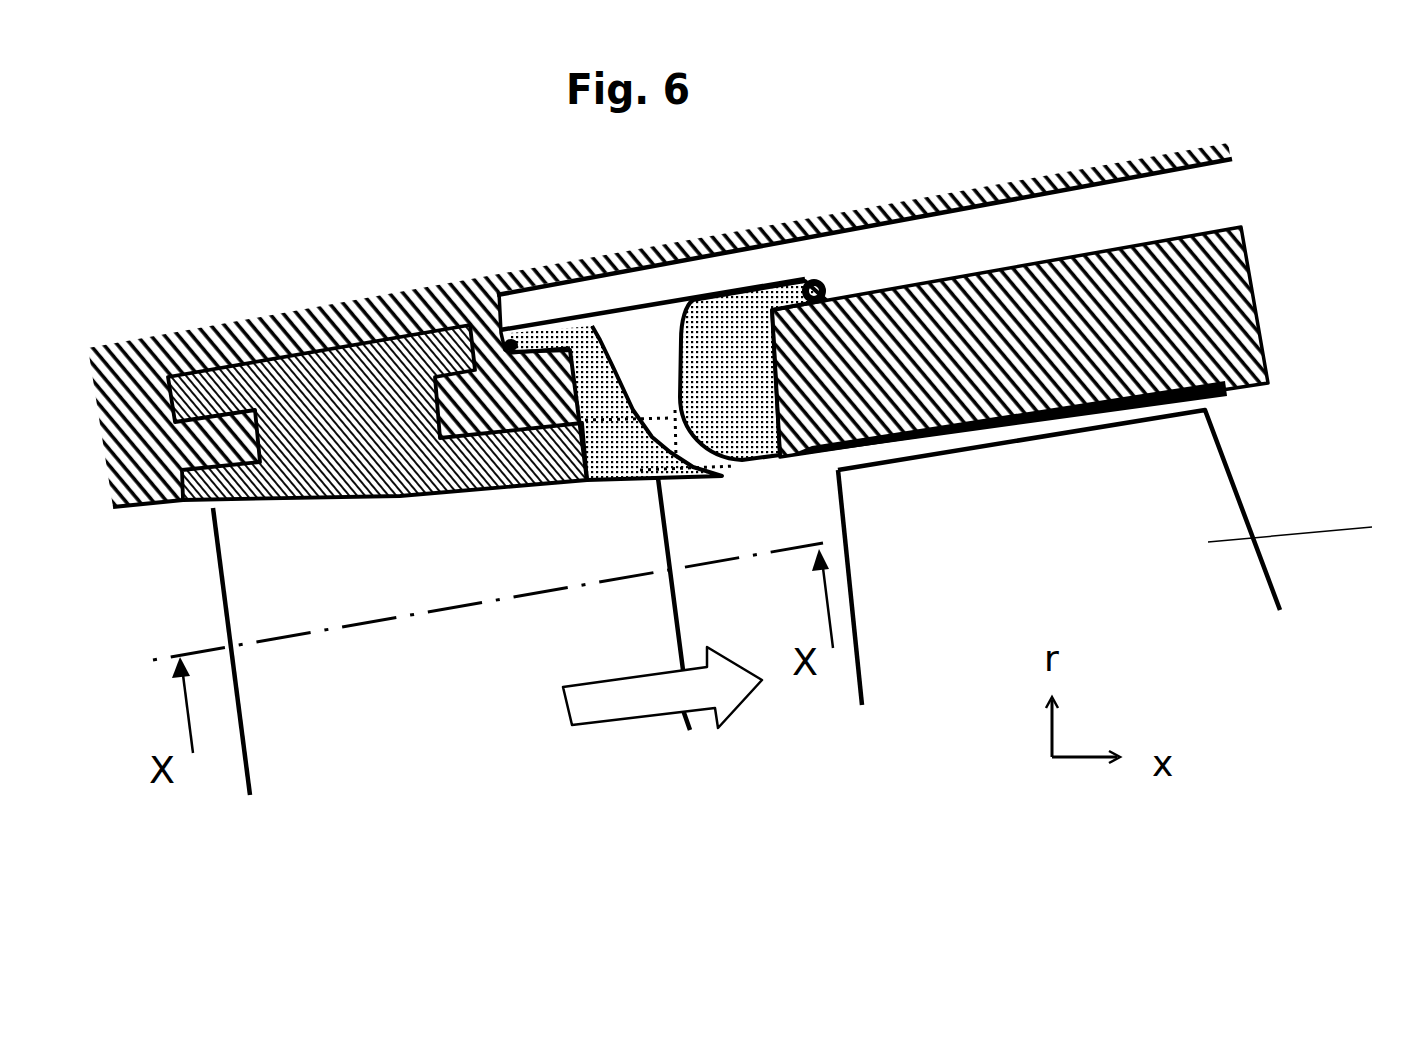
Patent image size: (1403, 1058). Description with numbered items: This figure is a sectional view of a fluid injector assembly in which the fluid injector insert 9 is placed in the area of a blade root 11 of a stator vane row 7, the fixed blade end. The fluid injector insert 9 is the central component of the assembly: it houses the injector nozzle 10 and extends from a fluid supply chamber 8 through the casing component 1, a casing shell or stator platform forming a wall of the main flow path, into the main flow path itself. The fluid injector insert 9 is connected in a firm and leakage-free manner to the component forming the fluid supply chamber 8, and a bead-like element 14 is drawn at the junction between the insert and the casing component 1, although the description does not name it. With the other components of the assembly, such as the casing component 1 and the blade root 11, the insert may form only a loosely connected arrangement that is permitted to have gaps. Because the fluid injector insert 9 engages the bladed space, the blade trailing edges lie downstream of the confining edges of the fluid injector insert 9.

The casing component 1 is at (1228, 310).
The stator vane row 7 is at (433, 657).
The fluid supply chamber 8 is at (1197, 198).
The fluid injector insert 9 is at (727, 337).
The injector nozzle 10 is at (736, 468).
The blade root 11 is at (312, 410).
The seal bead 14 is at (820, 287).